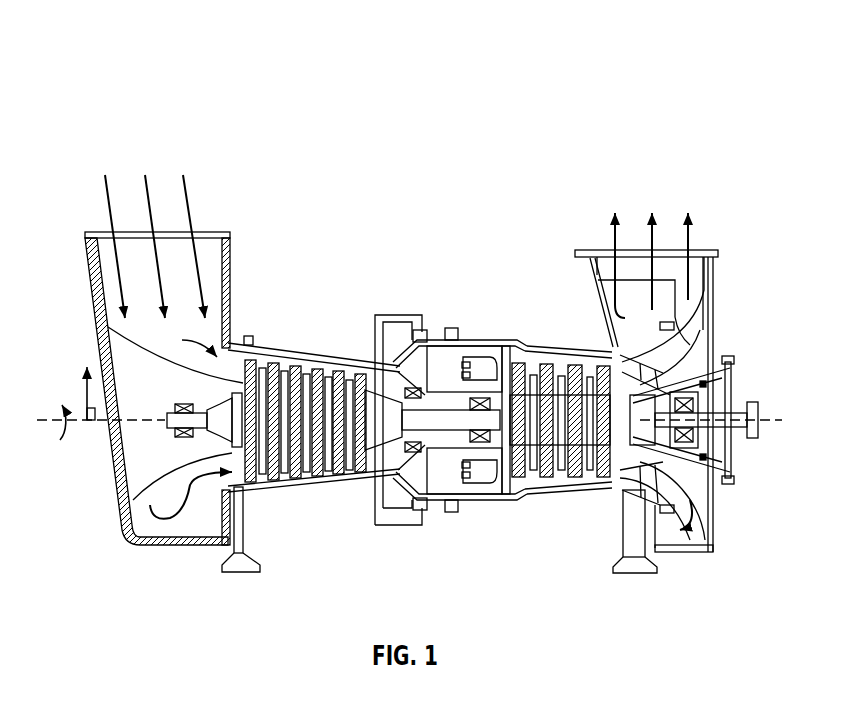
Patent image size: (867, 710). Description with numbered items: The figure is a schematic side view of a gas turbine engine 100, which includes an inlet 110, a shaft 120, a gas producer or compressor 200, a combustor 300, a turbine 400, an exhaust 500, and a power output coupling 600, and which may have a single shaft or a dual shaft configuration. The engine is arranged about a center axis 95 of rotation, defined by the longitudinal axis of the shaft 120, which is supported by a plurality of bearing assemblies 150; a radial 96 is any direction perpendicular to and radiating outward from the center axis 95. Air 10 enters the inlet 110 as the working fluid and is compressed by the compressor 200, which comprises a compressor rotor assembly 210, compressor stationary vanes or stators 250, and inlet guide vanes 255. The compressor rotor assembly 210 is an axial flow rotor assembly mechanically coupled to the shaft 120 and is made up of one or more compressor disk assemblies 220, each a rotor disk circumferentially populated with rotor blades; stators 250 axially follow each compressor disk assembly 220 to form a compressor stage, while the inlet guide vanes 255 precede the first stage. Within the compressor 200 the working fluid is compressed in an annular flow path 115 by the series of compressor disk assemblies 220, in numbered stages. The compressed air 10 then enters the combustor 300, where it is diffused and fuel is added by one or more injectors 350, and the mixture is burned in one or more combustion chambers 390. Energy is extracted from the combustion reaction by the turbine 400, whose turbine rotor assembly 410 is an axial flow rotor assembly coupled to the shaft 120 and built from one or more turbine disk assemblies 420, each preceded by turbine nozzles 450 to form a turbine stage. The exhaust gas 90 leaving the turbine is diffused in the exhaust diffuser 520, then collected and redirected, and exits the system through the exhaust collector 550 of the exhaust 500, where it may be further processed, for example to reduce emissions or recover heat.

The gas turbine engine 100 is at (117, 27).
The air 10 is at (107, 205).
The inlet 110 is at (225, 153).
The annular flow path 115 is at (182, 342).
The shaft 120 is at (172, 412).
The bearing assemblies 150 is at (195, 430).
The radial 96 is at (82, 385).
The center axis 95 is at (60, 440).
The compressor 200 is at (398, 153).
The compressor rotor assembly 210 is at (307, 537).
The compressor disk assemblies 220 is at (287, 480).
The compressor stationary vanes 250 is at (308, 362).
The inlet guide vanes 255 is at (248, 345).
The combustor 300 is at (493, 153).
The injectors 350 is at (450, 345).
The combustion chambers 390 is at (477, 355).
The turbine 400 is at (610, 153).
The turbine rotor assembly 410 is at (560, 535).
The turbine disk assemblies 420 is at (545, 490).
The turbine nozzles 450 is at (600, 360).
The exhaust 500 is at (737, 172).
The exhaust diffuser 520 is at (622, 362).
The exhaust collector 550 is at (590, 287).
The exhaust gas 90 is at (613, 240).
The power output coupling 600 is at (755, 402).